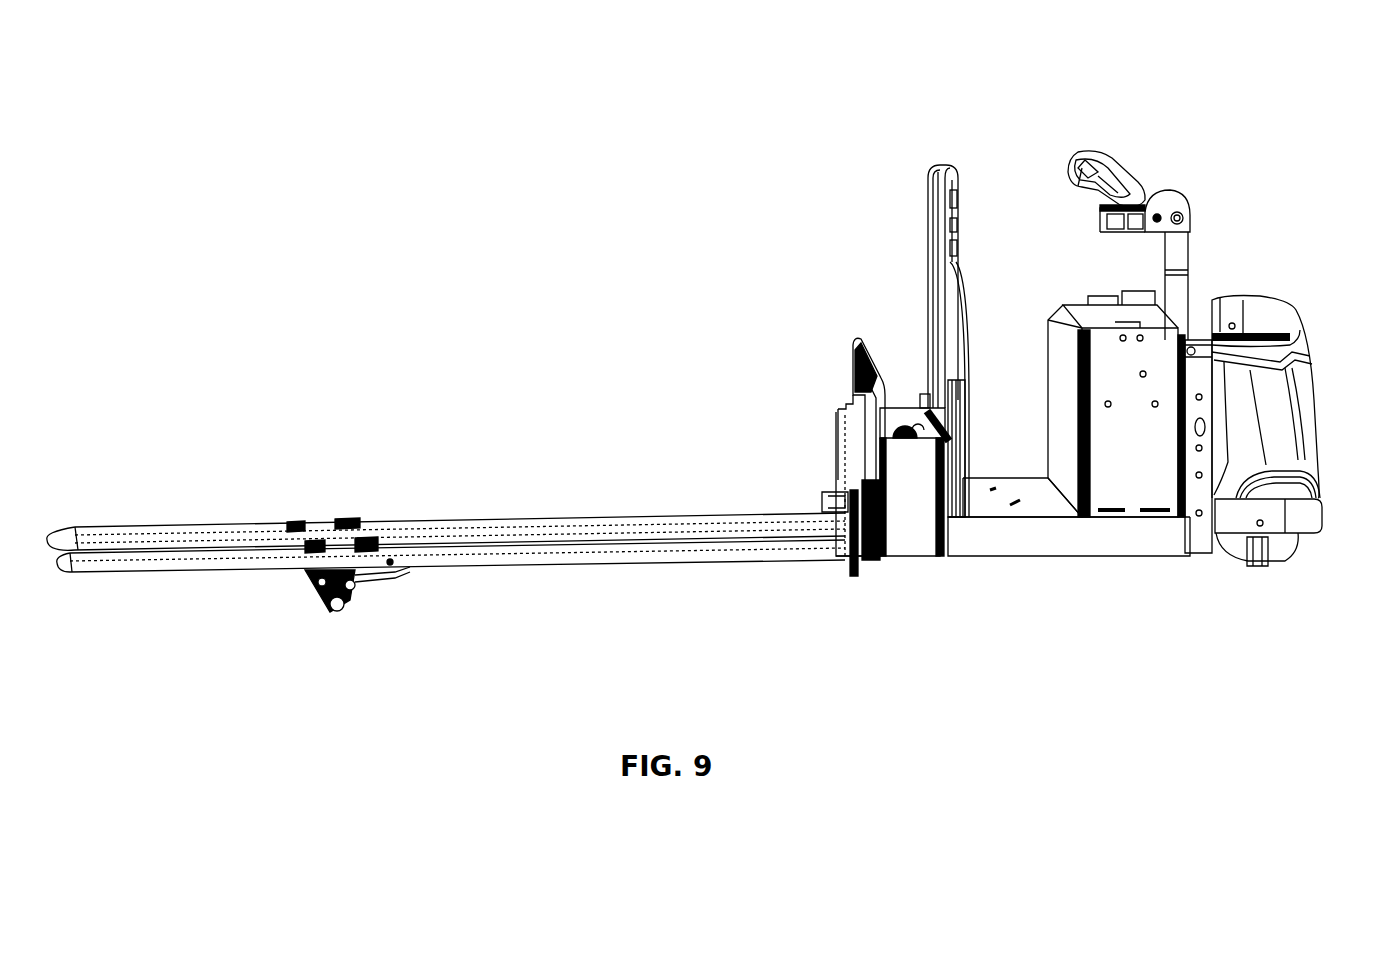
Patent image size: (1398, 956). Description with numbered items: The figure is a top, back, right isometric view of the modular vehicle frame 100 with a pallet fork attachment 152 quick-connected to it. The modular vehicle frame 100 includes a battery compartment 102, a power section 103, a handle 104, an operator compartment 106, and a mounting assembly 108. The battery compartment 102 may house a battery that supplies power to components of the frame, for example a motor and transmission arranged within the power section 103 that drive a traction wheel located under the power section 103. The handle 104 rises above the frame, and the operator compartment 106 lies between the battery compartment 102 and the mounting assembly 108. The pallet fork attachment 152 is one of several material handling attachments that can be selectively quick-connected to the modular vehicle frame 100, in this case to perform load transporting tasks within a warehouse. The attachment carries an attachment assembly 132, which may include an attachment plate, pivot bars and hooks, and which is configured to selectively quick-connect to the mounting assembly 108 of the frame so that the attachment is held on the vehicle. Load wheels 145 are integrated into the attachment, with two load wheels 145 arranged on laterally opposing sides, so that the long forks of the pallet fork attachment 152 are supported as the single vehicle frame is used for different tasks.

The modular vehicle frame 100 is at (478, 140).
The battery compartment 102 is at (1126, 484).
The power section 103 is at (1292, 318).
The handle 104 is at (1118, 162).
The operator compartment 106 is at (1020, 500).
The mounting assembly 108 is at (955, 485).
The attachment assembly 132 is at (928, 494).
The load wheels 145 is at (306, 586).
The pallet fork attachment 152 is at (787, 570).